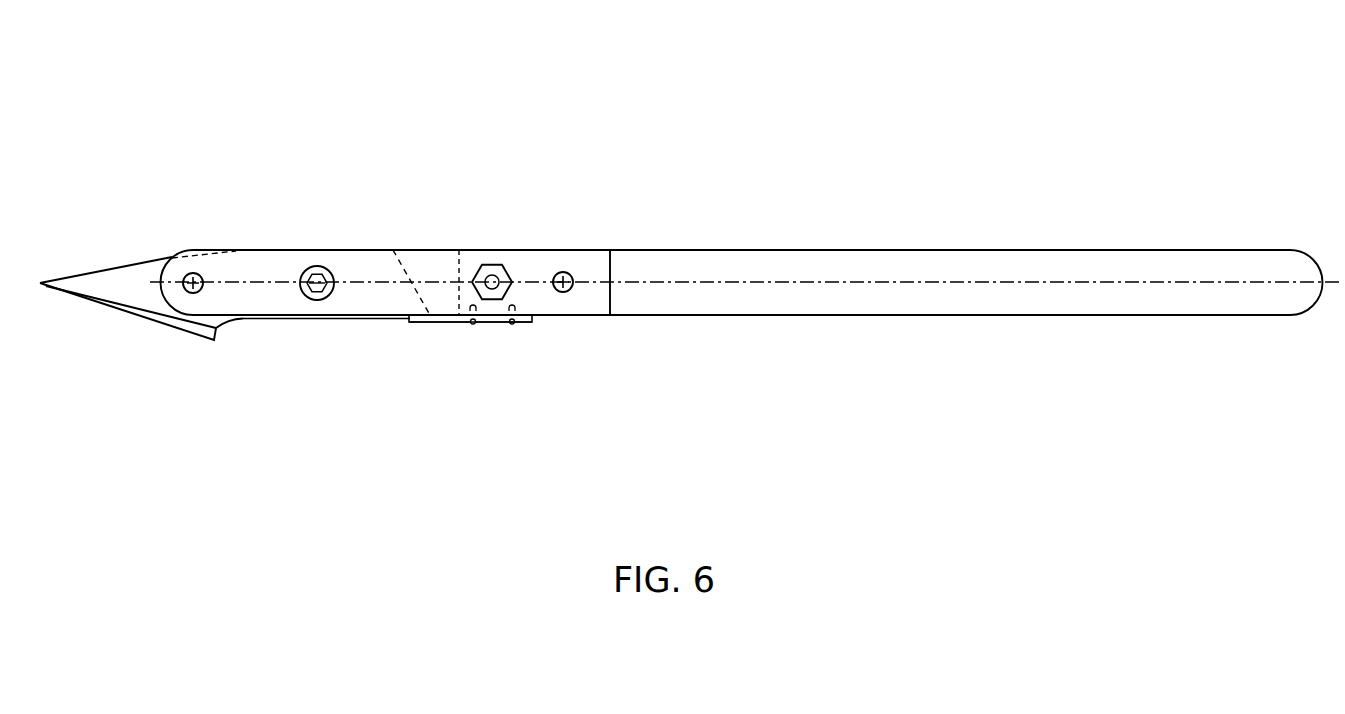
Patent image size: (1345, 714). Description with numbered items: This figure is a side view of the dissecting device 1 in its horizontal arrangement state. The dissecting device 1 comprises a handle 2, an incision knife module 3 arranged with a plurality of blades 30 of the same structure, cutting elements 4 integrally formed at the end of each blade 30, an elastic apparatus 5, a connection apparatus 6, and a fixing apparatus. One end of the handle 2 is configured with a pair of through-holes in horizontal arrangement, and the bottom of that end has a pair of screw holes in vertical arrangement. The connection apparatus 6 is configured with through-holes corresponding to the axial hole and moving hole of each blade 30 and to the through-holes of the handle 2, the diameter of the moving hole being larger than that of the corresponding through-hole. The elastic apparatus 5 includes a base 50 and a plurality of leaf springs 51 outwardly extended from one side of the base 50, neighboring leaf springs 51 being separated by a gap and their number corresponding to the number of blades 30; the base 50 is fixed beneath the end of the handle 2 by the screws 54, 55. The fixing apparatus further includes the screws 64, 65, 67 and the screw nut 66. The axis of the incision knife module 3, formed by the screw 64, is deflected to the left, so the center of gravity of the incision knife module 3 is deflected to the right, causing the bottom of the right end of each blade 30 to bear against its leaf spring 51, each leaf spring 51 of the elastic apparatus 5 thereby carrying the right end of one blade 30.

The dissecting device 1 is at (687, 57).
The handle 2 is at (920, 312).
The incision knife module 3 is at (105, 253).
The blade 30 is at (100, 280).
The cutting element 4 is at (128, 307).
The elastic apparatus 5 is at (488, 324).
The base 50 is at (527, 324).
The leaf spring 51 is at (433, 322).
The screw 54 is at (474, 324).
The screw 55 is at (511, 324).
The connection apparatus 6 is at (587, 307).
The screw 64 is at (195, 273).
The screw 65 is at (320, 265).
The screw nut 66 is at (497, 263).
The screw 67 is at (567, 271).